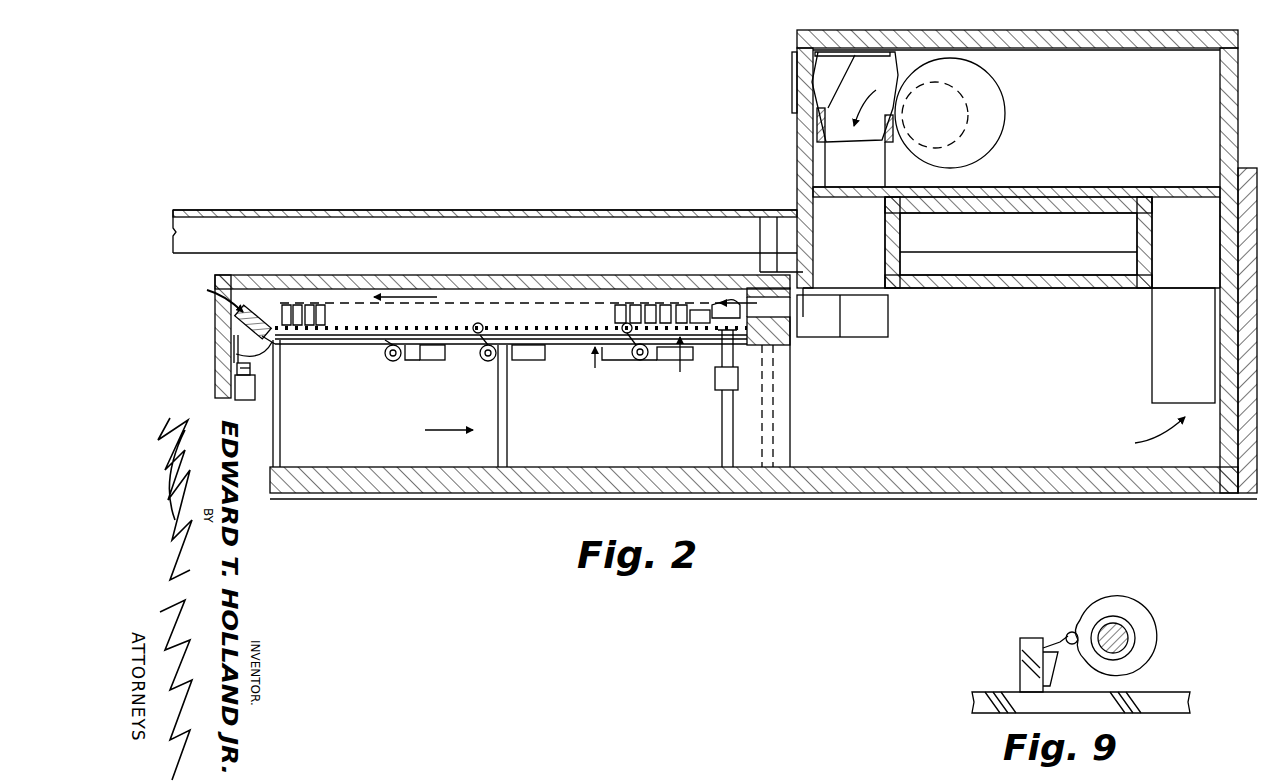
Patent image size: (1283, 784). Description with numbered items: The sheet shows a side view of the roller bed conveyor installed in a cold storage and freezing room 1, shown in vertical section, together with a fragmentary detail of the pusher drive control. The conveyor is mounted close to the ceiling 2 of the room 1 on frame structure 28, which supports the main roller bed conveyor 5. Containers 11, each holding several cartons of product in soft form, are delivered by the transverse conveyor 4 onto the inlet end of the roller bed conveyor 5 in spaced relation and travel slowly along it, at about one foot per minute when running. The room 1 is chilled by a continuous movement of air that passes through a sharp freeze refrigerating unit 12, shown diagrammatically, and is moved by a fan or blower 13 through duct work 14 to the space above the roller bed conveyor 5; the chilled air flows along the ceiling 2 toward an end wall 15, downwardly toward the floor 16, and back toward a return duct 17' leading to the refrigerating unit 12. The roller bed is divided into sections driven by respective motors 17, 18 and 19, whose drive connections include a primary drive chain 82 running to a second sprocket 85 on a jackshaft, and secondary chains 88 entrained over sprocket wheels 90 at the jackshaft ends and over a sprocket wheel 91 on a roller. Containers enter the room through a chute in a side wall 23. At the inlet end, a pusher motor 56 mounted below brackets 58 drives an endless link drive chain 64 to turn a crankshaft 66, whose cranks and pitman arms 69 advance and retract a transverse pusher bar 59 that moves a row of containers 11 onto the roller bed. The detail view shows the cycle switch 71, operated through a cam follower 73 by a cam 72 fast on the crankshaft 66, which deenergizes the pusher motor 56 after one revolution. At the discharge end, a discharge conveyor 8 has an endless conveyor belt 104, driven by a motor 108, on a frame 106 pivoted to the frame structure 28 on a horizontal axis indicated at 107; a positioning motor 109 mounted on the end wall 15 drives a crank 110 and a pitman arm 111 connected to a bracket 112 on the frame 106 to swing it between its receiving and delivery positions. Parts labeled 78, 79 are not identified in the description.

In FIG. 2, the cold storage and freezing room 1 is at (384, 433).
In FIG. 2, the ceiling 2 is at (509, 262).
In FIG. 2, the transverse conveyor 4 is at (682, 366).
In FIG. 2, the roller bed conveyor 5 is at (560, 323).
In FIG. 2, the discharge conveyor 8 is at (217, 297).
In FIG. 2, the containers 11 is at (266, 312).
In FIG. 2, the sharp freeze refrigerating unit 12 is at (1108, 156).
In FIG. 2, the fan or blower 13 is at (988, 113).
In FIG. 2, the duct work 14 is at (862, 173).
In FIG. 2, the end wall 15 is at (222, 350).
In FIG. 2, the floor 16 is at (548, 460).
In FIG. 2, the motor 17 is at (665, 385).
In FIG. 2, the return duct 17' is at (1175, 365).
In FIG. 2, the motor 18 is at (540, 362).
In FIG. 2, the motor 19 is at (440, 362).
In FIG. 2, the side wall 23 is at (440, 448).
In FIG. 2, the frame structure 28 is at (595, 374).
In FIG. 2, the pusher motor 56 is at (723, 394).
In FIG. 9, the brackets 58 is at (1176, 694).
In FIG. 2, the pusher bar 59 is at (700, 310).
In FIG. 2, the endless link drive chain 64 is at (720, 350).
In FIG. 9, the crankshaft 66 is at (1125, 630).
In FIG. 2, the pitman arms 69 is at (721, 318).
In FIG. 9, the cycle switch 71 is at (1030, 638).
In FIG. 9, the cam 72 is at (1112, 600).
In FIG. 9, the cam follower 73 is at (1070, 630).
In FIG. 2, the conveyor rail 78 is at (353, 345).
In FIG. 2, the conveyor rail 79 is at (368, 345).
In FIG. 2, the primary drive chain 82 is at (423, 360).
In FIG. 2, the second sprocket 85 is at (402, 362).
In FIG. 2, the secondary chain 88 is at (462, 345).
In FIG. 2, the sprocket wheels 90 is at (390, 362).
In FIG. 2, the sprocket wheel 91 is at (476, 323).
In FIG. 2, the endless conveyor belt 104 is at (252, 310).
In FIG. 2, the frame 106 is at (258, 358).
In FIG. 2, the pivot axis 107 is at (270, 343).
In FIG. 2, the motor 108 is at (238, 318).
In FIG. 2, the positioning motor 109 is at (256, 395).
In FIG. 2, the crank 110 is at (237, 370).
In FIG. 2, the pitman arm 111 is at (233, 352).
In FIG. 2, the bracket 112 is at (235, 335).